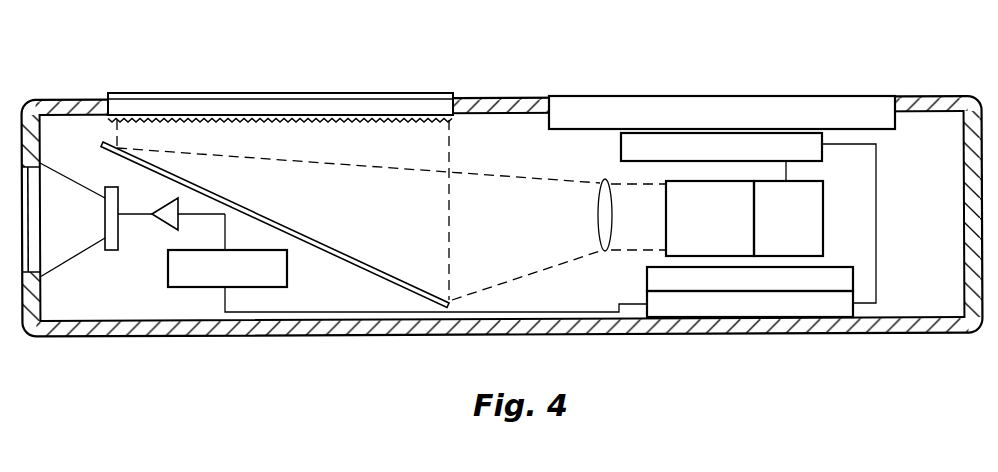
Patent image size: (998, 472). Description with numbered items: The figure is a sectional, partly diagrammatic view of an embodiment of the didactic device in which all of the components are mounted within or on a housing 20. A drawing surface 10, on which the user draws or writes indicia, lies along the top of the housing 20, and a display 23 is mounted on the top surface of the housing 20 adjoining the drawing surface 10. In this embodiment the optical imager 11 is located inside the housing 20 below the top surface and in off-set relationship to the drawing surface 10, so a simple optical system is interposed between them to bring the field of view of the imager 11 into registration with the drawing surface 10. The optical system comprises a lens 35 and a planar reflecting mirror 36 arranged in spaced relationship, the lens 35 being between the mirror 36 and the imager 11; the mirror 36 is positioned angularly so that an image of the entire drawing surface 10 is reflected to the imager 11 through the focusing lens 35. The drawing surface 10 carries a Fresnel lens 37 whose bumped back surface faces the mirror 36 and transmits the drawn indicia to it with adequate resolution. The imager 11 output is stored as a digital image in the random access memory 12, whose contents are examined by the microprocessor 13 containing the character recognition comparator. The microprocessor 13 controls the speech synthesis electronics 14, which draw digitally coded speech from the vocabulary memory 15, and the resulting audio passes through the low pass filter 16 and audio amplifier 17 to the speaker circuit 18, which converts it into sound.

The drawing surface 10 is at (254, 97).
The Fresnel lens 37 is at (361, 117).
The display 23 is at (656, 114).
The microprocessor 13 is at (802, 150).
The optical imager 11 is at (680, 195).
The random access memory 12 is at (804, 200).
The vocabulary memory 15 is at (828, 277).
The speech synthesis electronics 14 is at (842, 307).
The lens 35 is at (601, 182).
The planar reflecting mirror 36 is at (300, 227).
The speaker circuit 18 is at (77, 245).
The audio amplifier 17 is at (165, 210).
The low pass filter 16 is at (273, 272).
The housing 20 is at (502, 326).